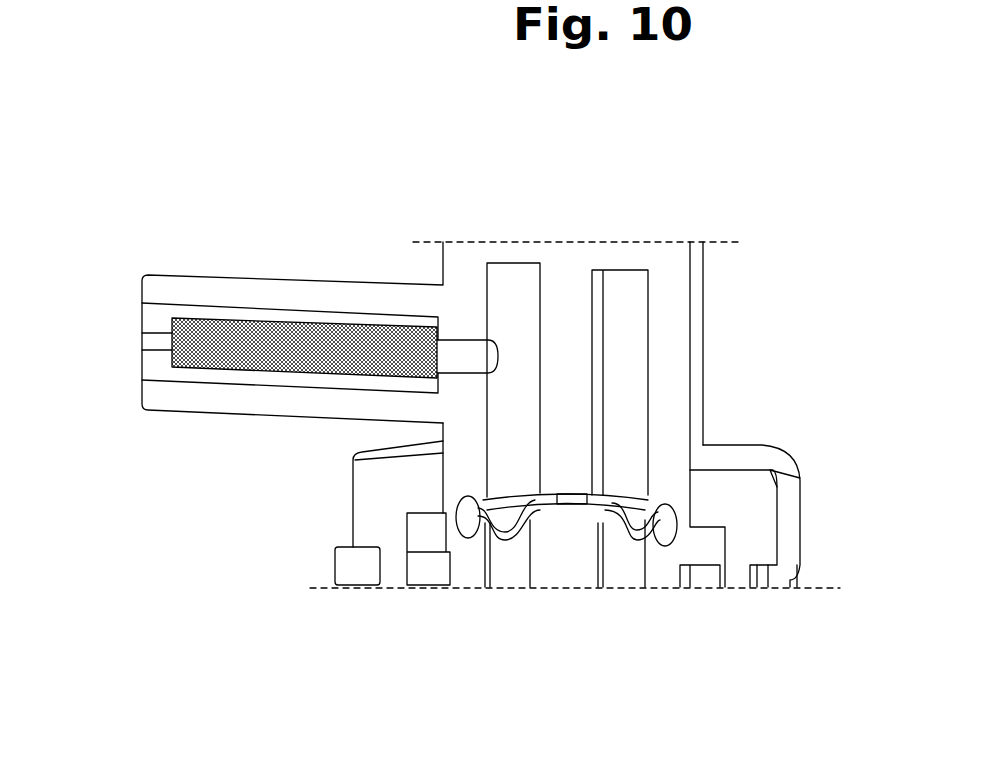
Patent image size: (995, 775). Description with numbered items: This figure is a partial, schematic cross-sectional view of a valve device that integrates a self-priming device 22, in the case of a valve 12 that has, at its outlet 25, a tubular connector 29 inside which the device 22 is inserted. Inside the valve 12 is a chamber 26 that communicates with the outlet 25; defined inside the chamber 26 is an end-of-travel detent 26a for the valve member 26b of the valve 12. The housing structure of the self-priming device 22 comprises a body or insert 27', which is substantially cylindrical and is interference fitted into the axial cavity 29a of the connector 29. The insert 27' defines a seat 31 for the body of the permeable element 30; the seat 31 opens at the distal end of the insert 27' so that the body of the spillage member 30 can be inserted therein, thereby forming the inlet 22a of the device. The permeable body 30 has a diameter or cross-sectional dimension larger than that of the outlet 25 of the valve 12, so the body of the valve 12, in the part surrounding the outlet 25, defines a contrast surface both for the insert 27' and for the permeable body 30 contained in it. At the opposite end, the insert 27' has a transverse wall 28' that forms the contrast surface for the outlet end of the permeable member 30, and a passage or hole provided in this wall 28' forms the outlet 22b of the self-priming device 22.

The valve 12 is at (765, 390).
The self-priming device 22 is at (295, 258).
The inlet 22a is at (432, 334).
The outlet 22b is at (157, 340).
The outlet 25 is at (483, 357).
The chamber 26 is at (628, 354).
The end-of-travel detent 26a is at (562, 288).
The valve member 26b is at (610, 574).
The insert 27' is at (137, 439).
The transverse wall 28' is at (121, 253).
The tubular connector 29 is at (372, 297).
The axial cavity 29a is at (373, 382).
The permeable element 30 is at (289, 357).
The seat 31 is at (222, 322).